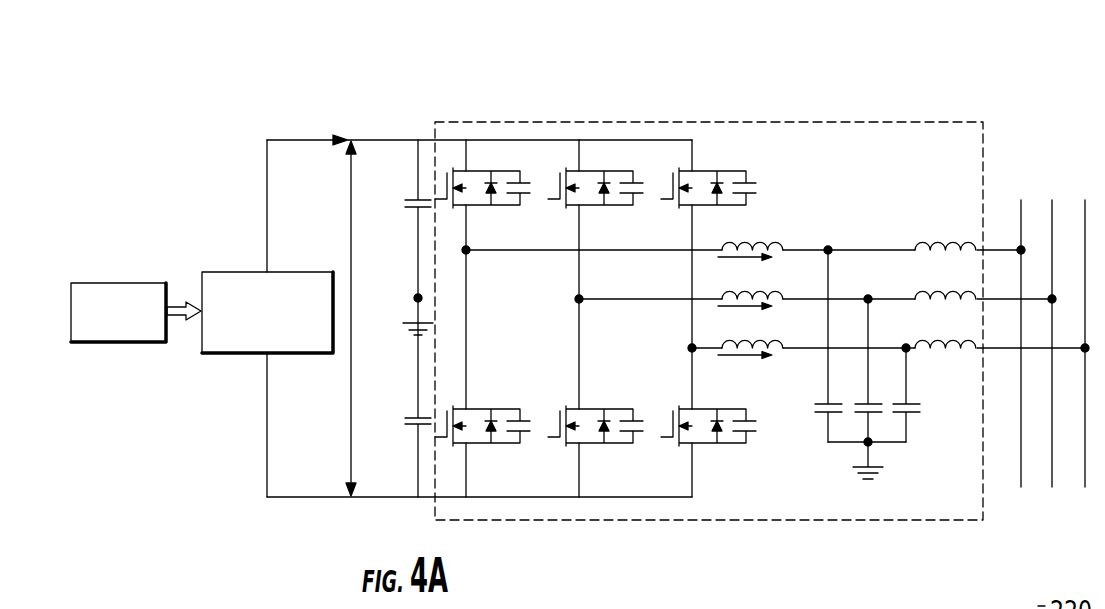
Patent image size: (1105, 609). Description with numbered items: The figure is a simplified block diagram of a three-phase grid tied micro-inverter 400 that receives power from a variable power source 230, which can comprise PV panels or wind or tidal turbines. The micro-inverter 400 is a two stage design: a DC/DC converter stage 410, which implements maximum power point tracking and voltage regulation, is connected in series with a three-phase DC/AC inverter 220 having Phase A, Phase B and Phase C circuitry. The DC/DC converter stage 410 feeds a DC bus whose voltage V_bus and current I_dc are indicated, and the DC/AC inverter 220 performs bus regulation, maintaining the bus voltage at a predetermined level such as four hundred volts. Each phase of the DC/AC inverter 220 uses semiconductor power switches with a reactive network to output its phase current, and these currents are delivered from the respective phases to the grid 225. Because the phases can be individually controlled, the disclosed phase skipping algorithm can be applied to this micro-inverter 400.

The variable power source 230 is at (128, 283).
The DC/DC converter stage 410 is at (258, 272).
The three-phase grid tied micro-inverter 400 is at (695, 108).
The DC/AC inverter 220 is at (826, 122).
The grid 225 is at (1075, 168).